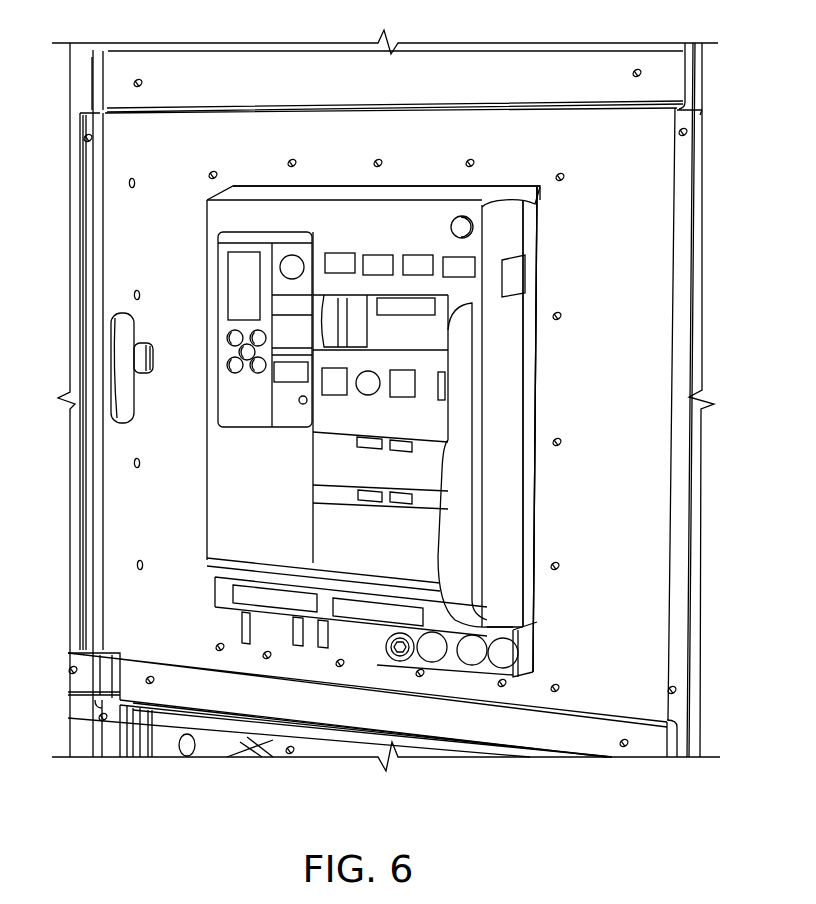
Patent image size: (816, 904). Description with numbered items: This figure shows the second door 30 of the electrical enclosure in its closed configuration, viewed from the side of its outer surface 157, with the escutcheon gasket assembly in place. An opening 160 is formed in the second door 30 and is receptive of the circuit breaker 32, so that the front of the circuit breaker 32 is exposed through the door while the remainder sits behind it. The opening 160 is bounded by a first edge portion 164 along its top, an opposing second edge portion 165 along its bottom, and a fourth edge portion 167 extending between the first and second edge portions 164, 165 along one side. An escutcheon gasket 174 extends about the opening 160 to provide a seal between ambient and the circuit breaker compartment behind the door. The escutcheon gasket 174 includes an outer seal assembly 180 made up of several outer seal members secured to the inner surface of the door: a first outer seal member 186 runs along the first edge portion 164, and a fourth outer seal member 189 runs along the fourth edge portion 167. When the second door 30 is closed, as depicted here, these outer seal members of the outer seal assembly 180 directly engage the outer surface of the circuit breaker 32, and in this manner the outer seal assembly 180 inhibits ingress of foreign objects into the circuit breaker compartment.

The second door 30 is at (140, 543).
The circuit breaker 32 is at (234, 502).
The outer surface 157 is at (632, 331).
The opening 160 is at (446, 200).
The first edge portion 164 is at (408, 191).
The second edge portion 165 is at (378, 650).
The fourth edge portion 167 is at (530, 285).
The escutcheon gasket 174 is at (552, 610).
The outer seal assembly 180 is at (526, 662).
The first outer seal member 186 is at (347, 193).
The fourth outer seal member 189 is at (533, 433).